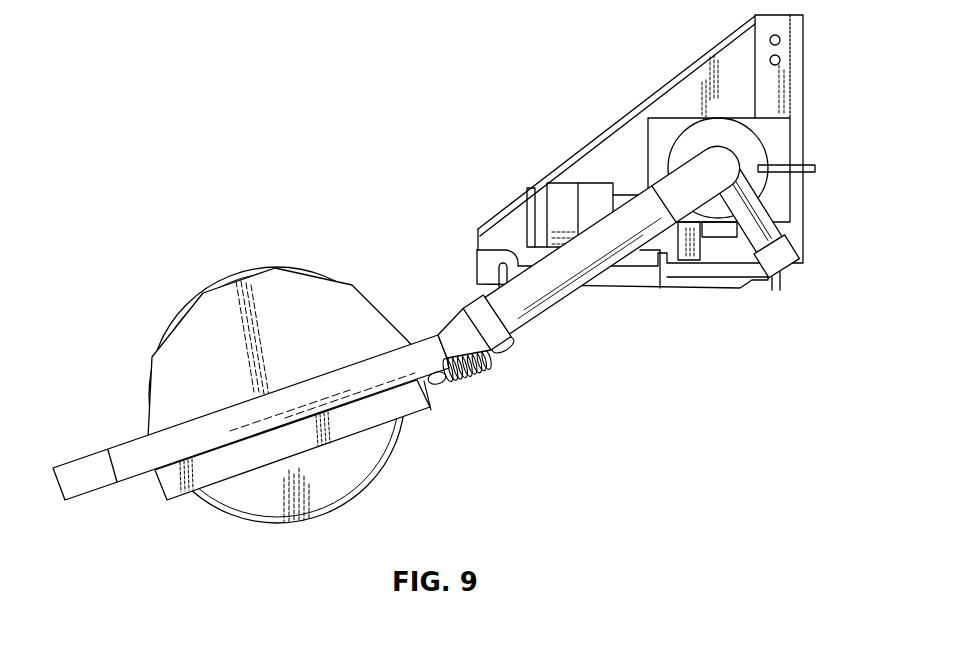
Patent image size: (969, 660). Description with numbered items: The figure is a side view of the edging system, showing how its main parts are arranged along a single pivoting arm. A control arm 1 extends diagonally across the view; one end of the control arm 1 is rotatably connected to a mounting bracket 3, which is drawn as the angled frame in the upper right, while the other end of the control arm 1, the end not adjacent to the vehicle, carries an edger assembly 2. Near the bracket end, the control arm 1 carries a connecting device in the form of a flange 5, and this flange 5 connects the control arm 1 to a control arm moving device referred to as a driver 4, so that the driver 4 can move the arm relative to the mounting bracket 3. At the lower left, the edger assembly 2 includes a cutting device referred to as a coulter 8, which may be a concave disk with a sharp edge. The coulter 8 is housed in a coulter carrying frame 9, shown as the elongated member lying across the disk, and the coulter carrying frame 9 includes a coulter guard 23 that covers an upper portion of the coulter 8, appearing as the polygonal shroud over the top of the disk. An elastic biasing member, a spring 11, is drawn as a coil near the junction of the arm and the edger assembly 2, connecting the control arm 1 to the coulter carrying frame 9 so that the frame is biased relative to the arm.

The control arm 1 is at (533, 323).
The edger assembly 2 is at (430, 335).
The mounting bracket 3 is at (617, 122).
The driver 4 is at (527, 188).
The flange 5 is at (765, 226).
The coulter 8 is at (370, 492).
The coulter carrying frame 9 is at (170, 490).
The spring 11 is at (470, 380).
The coulter guard 23 is at (155, 378).